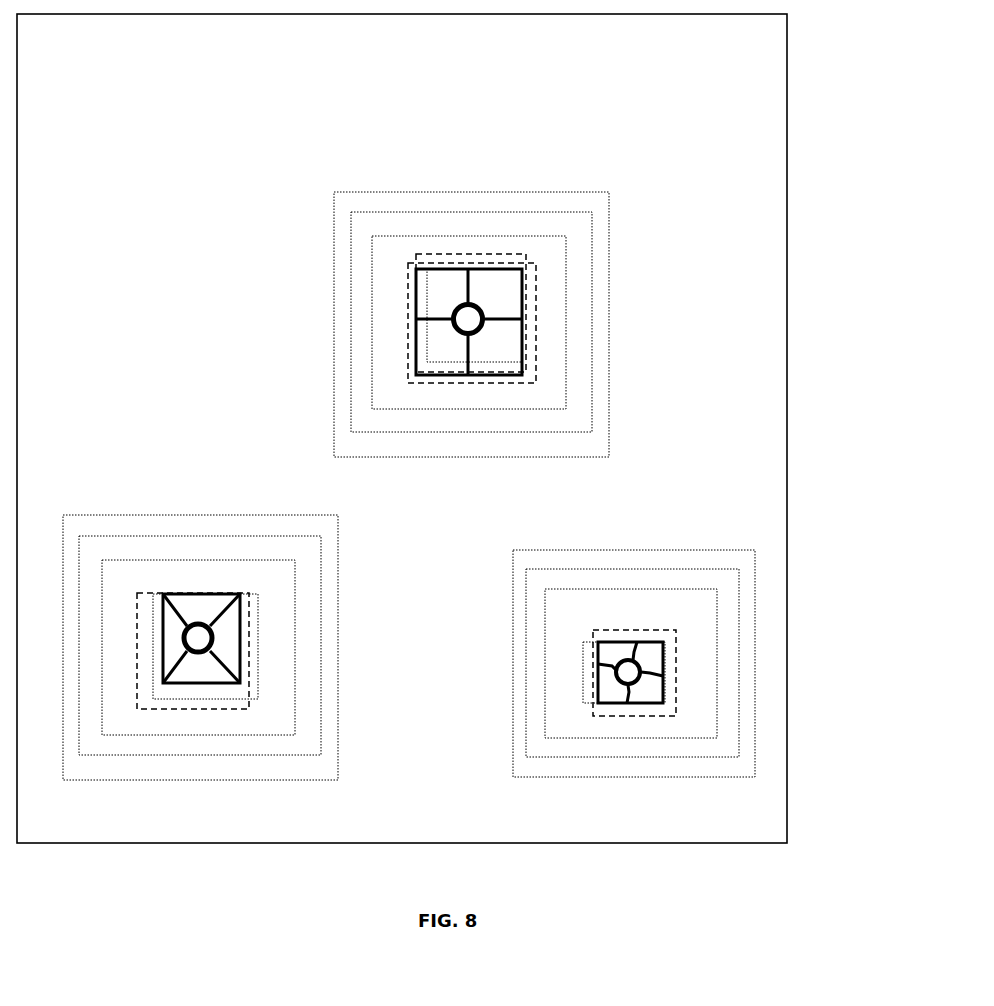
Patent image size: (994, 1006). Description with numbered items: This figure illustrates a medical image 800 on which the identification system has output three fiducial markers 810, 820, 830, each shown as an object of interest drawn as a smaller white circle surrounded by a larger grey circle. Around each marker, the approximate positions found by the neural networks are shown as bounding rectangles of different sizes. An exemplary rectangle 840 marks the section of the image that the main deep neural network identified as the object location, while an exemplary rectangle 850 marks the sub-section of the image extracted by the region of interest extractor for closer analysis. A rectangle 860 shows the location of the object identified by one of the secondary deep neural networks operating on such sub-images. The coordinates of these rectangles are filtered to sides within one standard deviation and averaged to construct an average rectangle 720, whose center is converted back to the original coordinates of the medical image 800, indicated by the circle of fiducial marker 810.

The medical image 800 is at (755, 49).
The fiducial marker 810 is at (462, 313).
The fiducial marker 820 is at (633, 667).
The fiducial marker 830 is at (203, 638).
The rectangle 840 is at (430, 362).
The rectangle 850 is at (557, 190).
The rectangle 860 is at (527, 257).
The average rectangle 720 is at (530, 298).